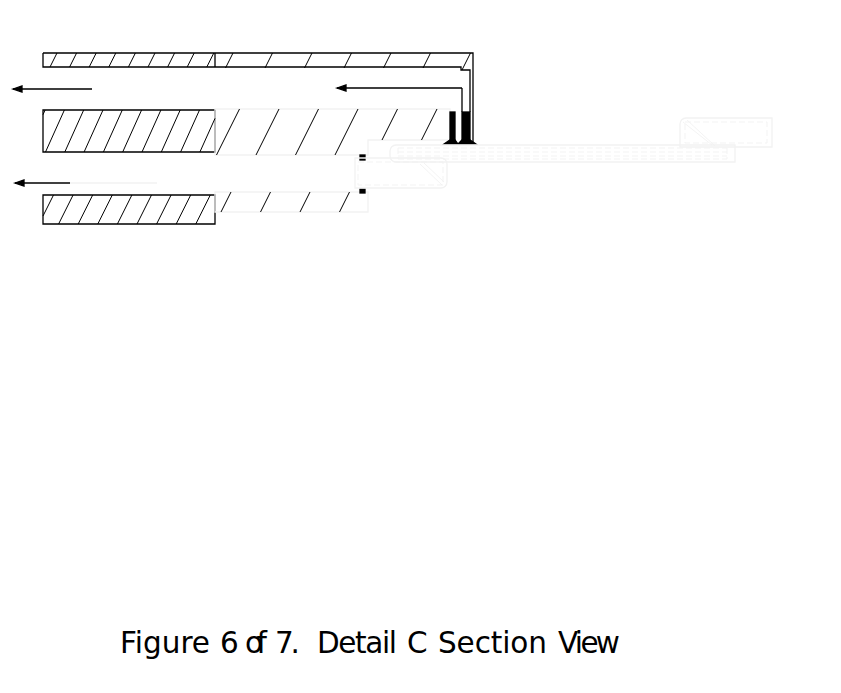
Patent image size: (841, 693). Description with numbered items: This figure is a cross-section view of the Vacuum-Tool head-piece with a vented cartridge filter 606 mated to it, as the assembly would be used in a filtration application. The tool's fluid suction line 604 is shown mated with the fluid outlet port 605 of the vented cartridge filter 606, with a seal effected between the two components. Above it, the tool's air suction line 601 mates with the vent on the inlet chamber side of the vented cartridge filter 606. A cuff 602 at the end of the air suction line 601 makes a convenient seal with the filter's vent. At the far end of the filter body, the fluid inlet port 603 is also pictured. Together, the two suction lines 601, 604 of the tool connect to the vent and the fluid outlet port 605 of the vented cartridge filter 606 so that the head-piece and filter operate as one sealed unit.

The air suction line 601 is at (243, 97).
The cuff 602 is at (478, 143).
The fluid inlet port 603 is at (738, 103).
The fluid suction line 604 is at (232, 166).
The fluid outlet port 605 is at (417, 200).
The vented cartridge filter 606 is at (567, 195).